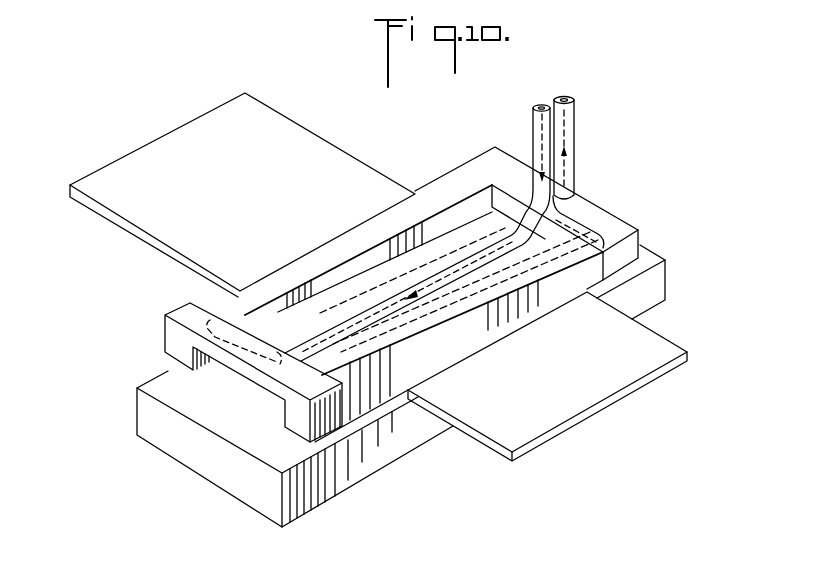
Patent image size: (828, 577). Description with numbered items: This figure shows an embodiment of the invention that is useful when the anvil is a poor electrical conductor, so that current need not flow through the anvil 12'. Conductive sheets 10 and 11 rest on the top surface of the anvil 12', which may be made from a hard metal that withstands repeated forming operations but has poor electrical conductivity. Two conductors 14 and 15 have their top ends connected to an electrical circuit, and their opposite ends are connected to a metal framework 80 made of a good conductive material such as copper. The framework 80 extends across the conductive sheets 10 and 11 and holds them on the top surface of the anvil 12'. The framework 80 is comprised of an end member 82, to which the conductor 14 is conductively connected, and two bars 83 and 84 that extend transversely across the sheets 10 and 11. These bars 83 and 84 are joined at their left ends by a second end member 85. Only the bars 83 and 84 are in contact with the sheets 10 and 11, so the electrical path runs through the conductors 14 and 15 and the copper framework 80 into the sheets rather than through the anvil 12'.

The conductive sheet 10 is at (662, 347).
The conductive sheet 11 is at (339, 165).
The anvil 12' is at (401, 386).
The conductor 14 is at (567, 128).
The conductor 15 is at (533, 118).
The metal framework 80 is at (662, 235).
The end member 82 is at (605, 220).
The bar 83 is at (316, 255).
The bar 84 is at (505, 325).
The end member 85 is at (186, 307).